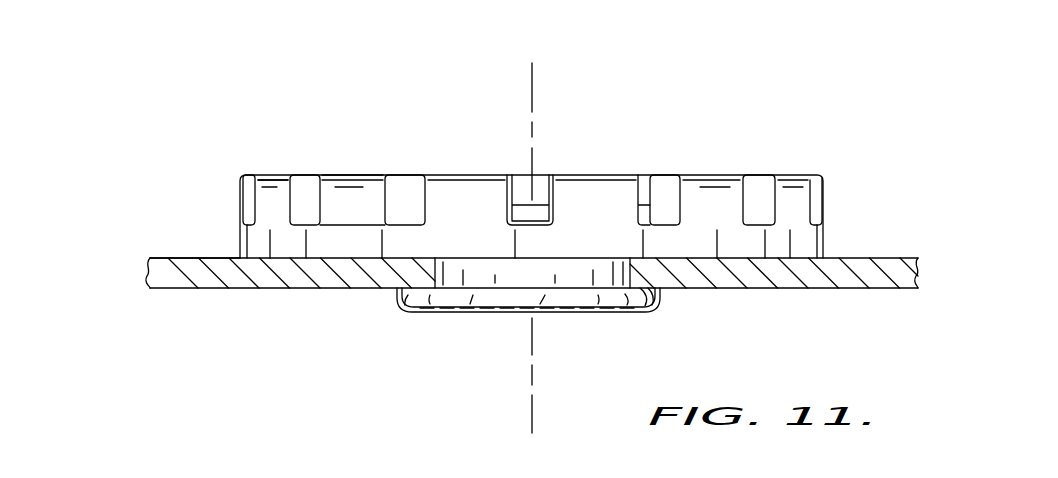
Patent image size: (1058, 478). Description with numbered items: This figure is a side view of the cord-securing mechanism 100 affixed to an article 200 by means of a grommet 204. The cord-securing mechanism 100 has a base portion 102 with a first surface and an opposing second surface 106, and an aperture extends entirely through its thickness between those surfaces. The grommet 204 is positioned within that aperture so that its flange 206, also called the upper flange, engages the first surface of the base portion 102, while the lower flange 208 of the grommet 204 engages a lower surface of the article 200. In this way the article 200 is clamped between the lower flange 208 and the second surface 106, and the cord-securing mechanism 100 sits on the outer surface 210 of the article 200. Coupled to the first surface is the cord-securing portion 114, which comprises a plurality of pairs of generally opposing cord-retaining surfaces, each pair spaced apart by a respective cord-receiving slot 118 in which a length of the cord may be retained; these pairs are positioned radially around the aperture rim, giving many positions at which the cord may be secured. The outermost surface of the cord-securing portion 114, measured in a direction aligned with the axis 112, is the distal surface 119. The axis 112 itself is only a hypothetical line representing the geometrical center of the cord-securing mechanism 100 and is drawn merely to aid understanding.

The cord-securing mechanism 100 is at (663, 87).
The base portion 102 is at (813, 243).
The second surface 106 is at (740, 260).
The axis 112 is at (531, 97).
The cord-securing portion 114 is at (277, 183).
The cord-receiving slot 118 is at (302, 225).
The distal surface 119 is at (378, 178).
The article 200 is at (883, 282).
The grommet 204 is at (480, 310).
The flange 206 is at (540, 205).
The lower flange 208 is at (623, 310).
The outer surface 210 is at (195, 257).